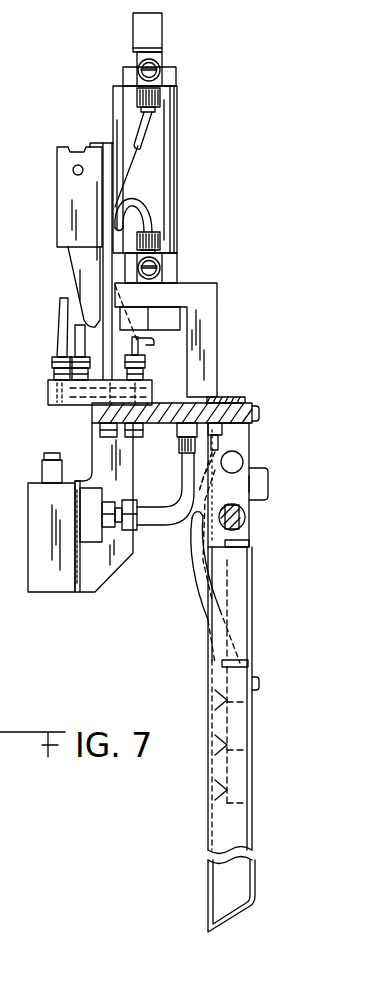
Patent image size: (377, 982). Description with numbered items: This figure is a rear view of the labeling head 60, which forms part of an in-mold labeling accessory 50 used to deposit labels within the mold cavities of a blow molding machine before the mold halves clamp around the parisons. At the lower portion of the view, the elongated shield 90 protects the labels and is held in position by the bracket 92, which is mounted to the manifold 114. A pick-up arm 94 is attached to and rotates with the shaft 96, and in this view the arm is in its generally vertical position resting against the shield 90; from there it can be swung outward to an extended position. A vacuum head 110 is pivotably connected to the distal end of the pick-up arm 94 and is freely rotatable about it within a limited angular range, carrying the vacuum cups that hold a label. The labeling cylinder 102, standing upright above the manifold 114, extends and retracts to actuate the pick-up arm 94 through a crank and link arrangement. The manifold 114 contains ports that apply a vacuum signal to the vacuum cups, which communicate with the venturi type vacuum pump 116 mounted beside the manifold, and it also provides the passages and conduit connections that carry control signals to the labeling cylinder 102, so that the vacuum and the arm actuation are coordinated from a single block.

The in-mold labeling accessory 50 is at (198, 232).
The labeling cylinder 102 is at (178, 157).
The bracket 92 is at (217, 350).
The manifold 114 is at (250, 405).
The shaft 96 is at (246, 519).
The pick-up arm 94 is at (249, 577).
The labeling head 60 is at (253, 626).
The venturi type vacuum pump 116 is at (46, 592).
The vacuum head 110 is at (252, 720).
The shield 90 is at (252, 787).